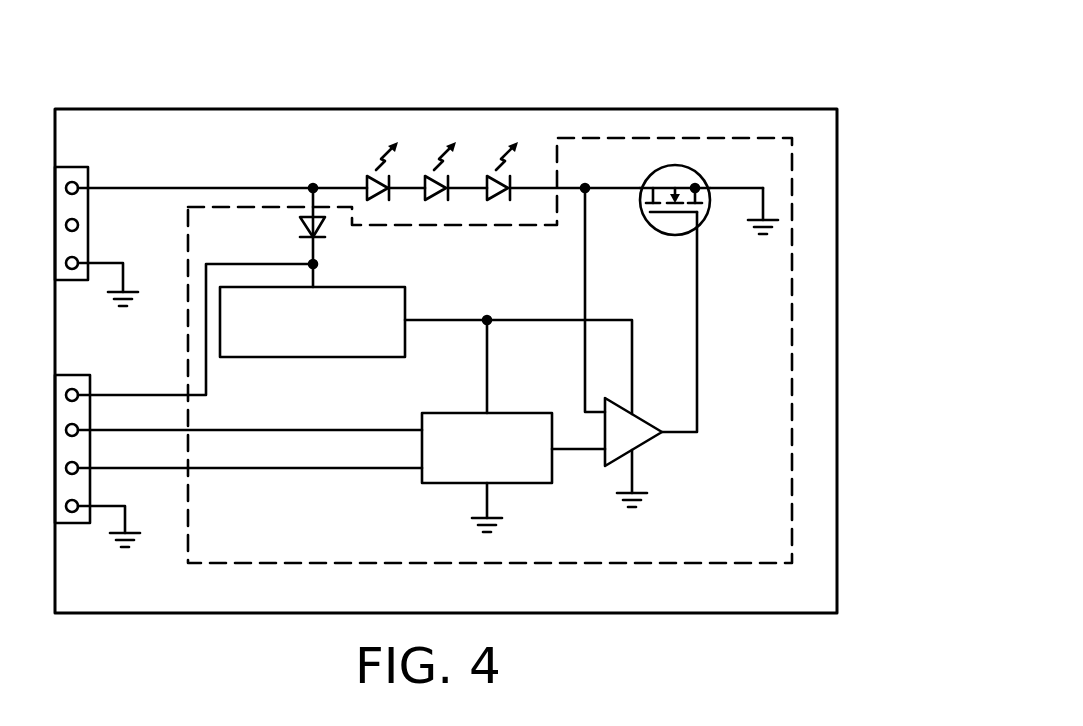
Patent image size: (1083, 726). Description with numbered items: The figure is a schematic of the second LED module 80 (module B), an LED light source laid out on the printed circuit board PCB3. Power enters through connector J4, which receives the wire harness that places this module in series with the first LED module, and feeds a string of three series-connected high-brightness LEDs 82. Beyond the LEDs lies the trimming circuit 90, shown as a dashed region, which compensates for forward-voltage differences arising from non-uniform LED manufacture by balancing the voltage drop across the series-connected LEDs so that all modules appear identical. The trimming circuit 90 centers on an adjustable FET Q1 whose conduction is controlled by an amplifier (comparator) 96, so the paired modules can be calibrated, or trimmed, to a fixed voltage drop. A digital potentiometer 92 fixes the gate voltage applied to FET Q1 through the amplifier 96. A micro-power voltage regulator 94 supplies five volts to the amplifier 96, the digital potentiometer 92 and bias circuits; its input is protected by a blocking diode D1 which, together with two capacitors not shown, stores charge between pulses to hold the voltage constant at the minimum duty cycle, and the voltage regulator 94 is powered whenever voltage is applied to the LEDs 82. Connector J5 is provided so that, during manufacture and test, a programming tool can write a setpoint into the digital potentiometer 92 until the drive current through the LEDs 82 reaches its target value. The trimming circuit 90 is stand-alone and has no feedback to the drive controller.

The LED module 80 is at (597, 104).
The LEDs 82 is at (378, 196).
The trimming circuit 90 is at (740, 137).
The digital potentiometer 92 is at (500, 412).
The voltage regulator 94 is at (275, 358).
The amplifier 96 is at (645, 446).
The printed circuit board PCB3 is at (302, 109).
The connector J4 is at (88, 167).
The connector J5 is at (91, 375).
The blocking diode D1 is at (201, 291).
The adjustable FET Q1 is at (675, 217).